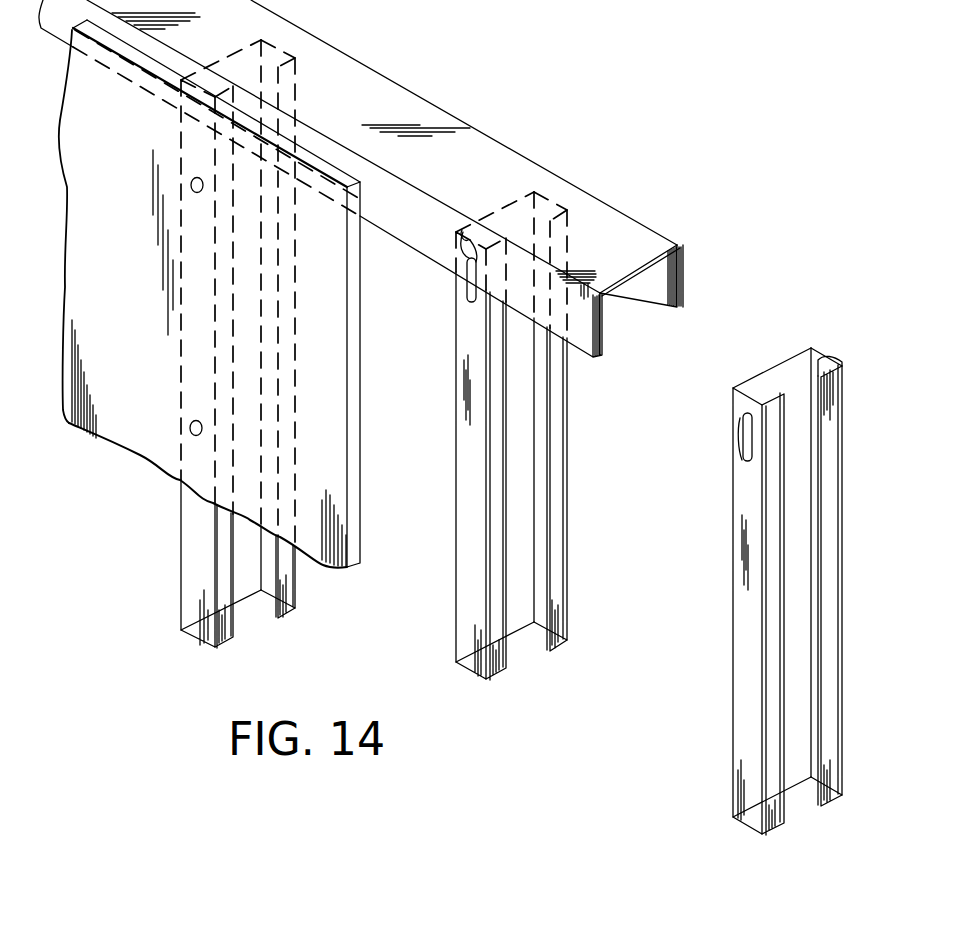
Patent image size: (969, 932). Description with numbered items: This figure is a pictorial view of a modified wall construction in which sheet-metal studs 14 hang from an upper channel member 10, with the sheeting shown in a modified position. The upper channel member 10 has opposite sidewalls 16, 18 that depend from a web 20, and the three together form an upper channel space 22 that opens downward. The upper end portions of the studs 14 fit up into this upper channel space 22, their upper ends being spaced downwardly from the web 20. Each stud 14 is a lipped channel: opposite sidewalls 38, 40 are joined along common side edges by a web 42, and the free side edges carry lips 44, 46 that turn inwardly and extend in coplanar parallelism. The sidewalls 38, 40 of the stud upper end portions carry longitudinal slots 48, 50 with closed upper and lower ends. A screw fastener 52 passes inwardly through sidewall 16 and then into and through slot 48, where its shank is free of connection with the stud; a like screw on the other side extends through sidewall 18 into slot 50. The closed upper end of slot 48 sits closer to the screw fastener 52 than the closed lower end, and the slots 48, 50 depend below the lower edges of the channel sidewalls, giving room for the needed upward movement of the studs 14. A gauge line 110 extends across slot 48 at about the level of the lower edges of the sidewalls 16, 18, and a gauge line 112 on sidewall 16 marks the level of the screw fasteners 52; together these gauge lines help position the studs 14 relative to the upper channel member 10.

The upper channel member 10 is at (391, 106).
The stud 14 is at (168, 580).
The sidewall 16 is at (429, 234).
The sidewall 18 is at (668, 276).
The web 20 is at (425, 120).
The upper channel space 22 is at (631, 305).
The sidewall 38 is at (444, 457).
The sidewall 40 is at (828, 520).
The web 42 is at (532, 555).
The lip 44 is at (228, 640).
The lip 46 is at (570, 627).
The longitudinal slot 48 is at (468, 305).
The longitudinal slot 50 is at (831, 353).
The screw fastener 52 is at (464, 230).
The gauge line 110 is at (738, 430).
The gauge line 112 is at (384, 228).